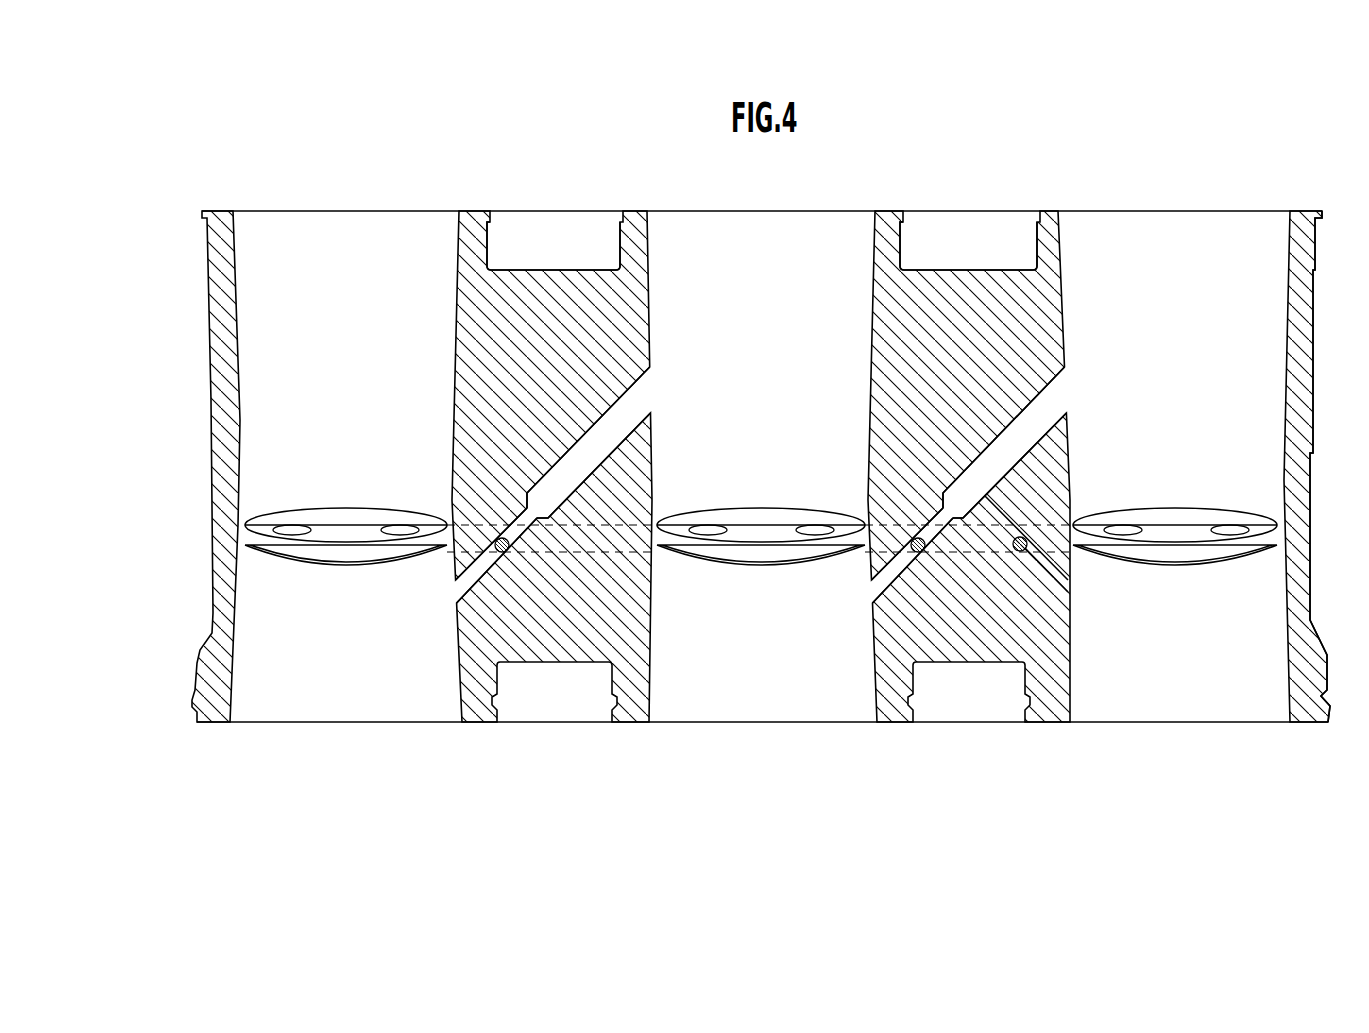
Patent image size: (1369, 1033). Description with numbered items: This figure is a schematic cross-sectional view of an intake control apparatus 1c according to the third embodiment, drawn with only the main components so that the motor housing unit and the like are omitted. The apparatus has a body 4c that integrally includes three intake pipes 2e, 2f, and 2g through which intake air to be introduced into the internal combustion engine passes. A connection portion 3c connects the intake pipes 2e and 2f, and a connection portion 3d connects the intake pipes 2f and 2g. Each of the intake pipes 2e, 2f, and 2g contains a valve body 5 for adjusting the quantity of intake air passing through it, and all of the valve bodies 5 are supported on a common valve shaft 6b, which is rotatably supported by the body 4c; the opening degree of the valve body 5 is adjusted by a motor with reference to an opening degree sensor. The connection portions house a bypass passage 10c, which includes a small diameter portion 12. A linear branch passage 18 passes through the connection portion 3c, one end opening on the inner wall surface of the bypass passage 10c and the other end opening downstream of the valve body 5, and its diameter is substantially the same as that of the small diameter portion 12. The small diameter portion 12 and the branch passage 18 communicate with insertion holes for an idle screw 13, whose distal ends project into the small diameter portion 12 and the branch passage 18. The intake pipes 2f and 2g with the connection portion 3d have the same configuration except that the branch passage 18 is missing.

The intake control apparatus 1c is at (232, 190).
The body 4c is at (191, 299).
The intake pipe 2g is at (466, 210).
The connection portion 3d is at (553, 270).
The bypass passage 10c is at (607, 425).
The intake pipe 2f is at (882, 210).
The connection portion 3c is at (968, 270).
The intake pipe 2e is at (1300, 210).
The valve body 5 is at (283, 514).
The valve shaft 6b is at (1305, 490).
The small diameter portion 12 is at (470, 578).
The idle screw 13 is at (510, 558).
The branch passage 18 is at (1030, 560).